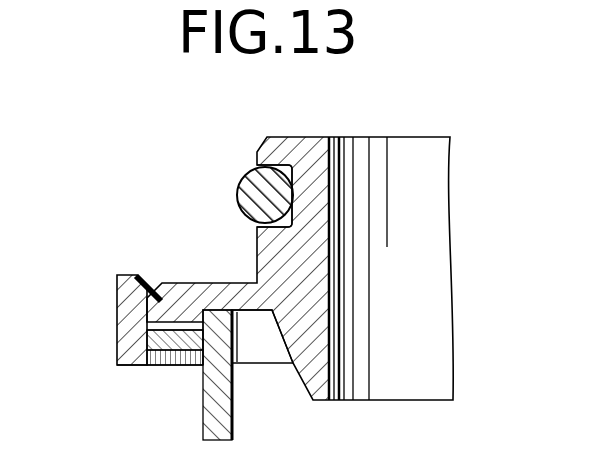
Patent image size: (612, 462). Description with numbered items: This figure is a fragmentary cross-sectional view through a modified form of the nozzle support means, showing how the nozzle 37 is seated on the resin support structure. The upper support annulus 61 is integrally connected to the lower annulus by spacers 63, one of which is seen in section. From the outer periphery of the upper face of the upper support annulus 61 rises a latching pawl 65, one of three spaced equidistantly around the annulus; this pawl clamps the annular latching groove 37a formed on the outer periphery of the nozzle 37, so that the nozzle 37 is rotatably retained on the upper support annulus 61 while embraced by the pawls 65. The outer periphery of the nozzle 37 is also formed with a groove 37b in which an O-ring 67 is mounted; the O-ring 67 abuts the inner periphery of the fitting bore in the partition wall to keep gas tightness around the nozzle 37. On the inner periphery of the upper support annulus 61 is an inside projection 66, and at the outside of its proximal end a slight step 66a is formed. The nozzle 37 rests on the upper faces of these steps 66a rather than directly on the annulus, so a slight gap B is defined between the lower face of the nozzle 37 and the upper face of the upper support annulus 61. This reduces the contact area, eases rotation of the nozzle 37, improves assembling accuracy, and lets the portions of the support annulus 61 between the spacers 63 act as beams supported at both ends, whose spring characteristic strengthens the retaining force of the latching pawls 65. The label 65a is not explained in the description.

The nozzle 37 is at (435, 200).
The annular latching groove 37a is at (158, 287).
The groove 37b is at (248, 172).
The O-ring 67 is at (245, 180).
The latching pawl 65 is at (117, 308).
The chamfered portion 65a is at (147, 274).
The gap B is at (150, 327).
The upper support annulus 61 is at (177, 343).
The spacer 63 is at (230, 417).
The inside projection 66 is at (243, 312).
The step 66a is at (200, 333).